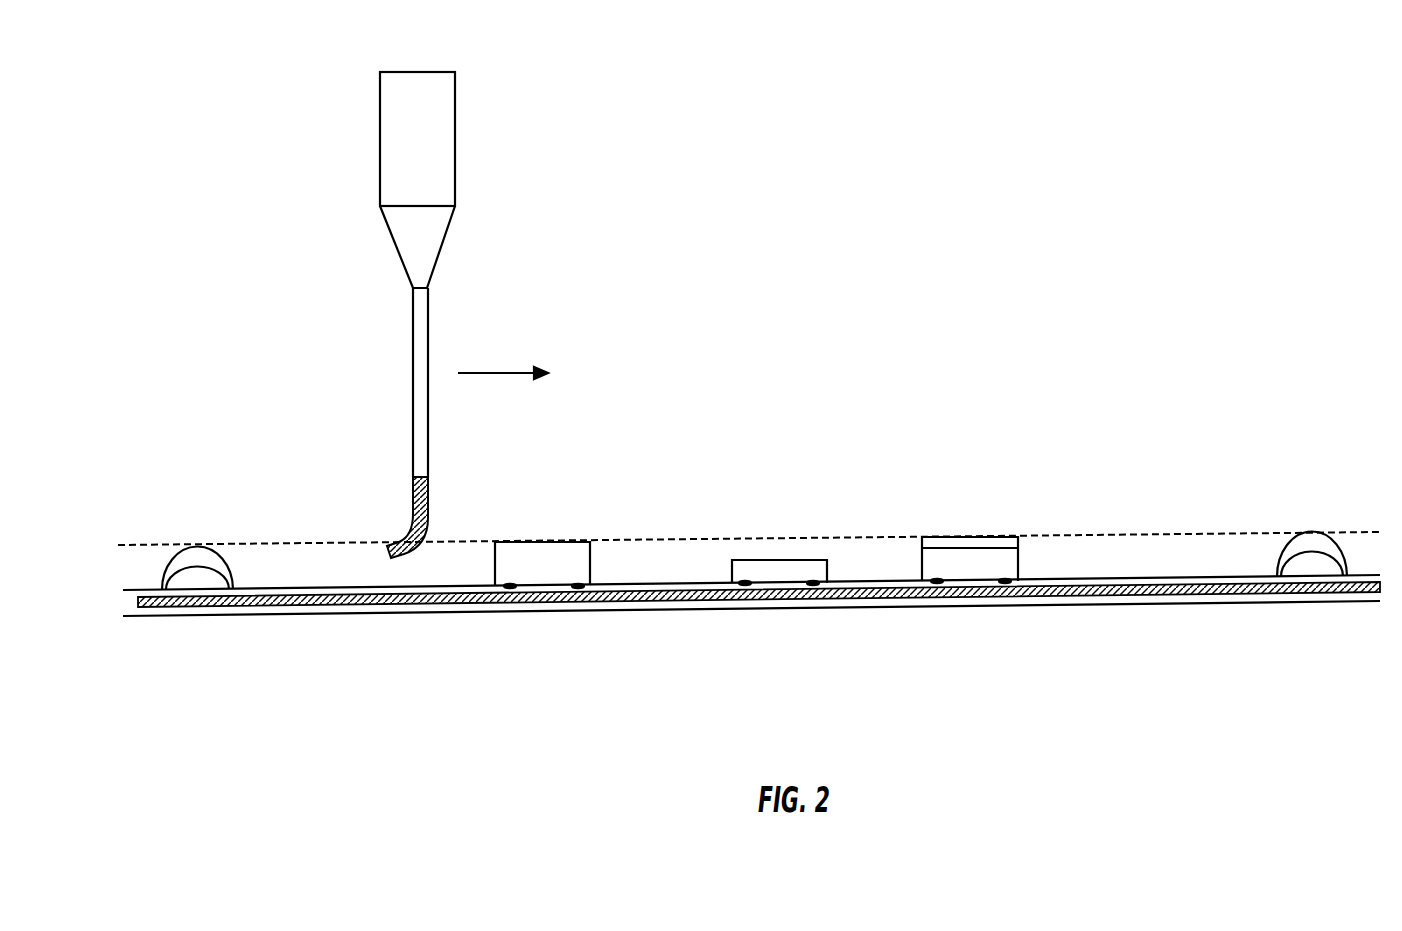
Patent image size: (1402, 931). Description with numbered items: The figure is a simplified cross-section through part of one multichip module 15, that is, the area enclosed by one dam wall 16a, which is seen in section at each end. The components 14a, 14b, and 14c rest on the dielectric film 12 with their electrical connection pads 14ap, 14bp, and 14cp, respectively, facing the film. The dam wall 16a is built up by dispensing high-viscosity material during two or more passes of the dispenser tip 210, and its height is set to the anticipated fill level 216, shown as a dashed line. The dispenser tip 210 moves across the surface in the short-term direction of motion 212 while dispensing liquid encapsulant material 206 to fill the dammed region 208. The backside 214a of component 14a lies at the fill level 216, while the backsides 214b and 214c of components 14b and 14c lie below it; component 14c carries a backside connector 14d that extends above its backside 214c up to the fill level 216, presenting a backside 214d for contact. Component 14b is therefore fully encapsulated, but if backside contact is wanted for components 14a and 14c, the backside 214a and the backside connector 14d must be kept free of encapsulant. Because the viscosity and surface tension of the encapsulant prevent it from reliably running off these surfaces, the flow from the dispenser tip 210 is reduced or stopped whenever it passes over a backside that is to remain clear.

The dielectric film 12 is at (188, 607).
The component 14a is at (542, 563).
The component 14b is at (779, 572).
The component 14c is at (970, 559).
The backside connector 14d is at (1007, 540).
The electrical connection pads 14ap is at (578, 590).
The electrical connection pads 14bp is at (813, 588).
The electrical connection pads 14cp is at (1005, 586).
The module 15 is at (1257, 645).
The dam wall 16a is at (1307, 565).
The liquid encapsulant material 206 is at (413, 497).
The dammed region 208 is at (680, 574).
The dispenser tip 210 is at (412, 365).
The direction of motion 212 is at (493, 373).
The backside 214a is at (540, 542).
The backside 214b is at (768, 560).
The backside 214c is at (935, 548).
The backside 214d is at (963, 537).
The fill level 216 is at (725, 538).